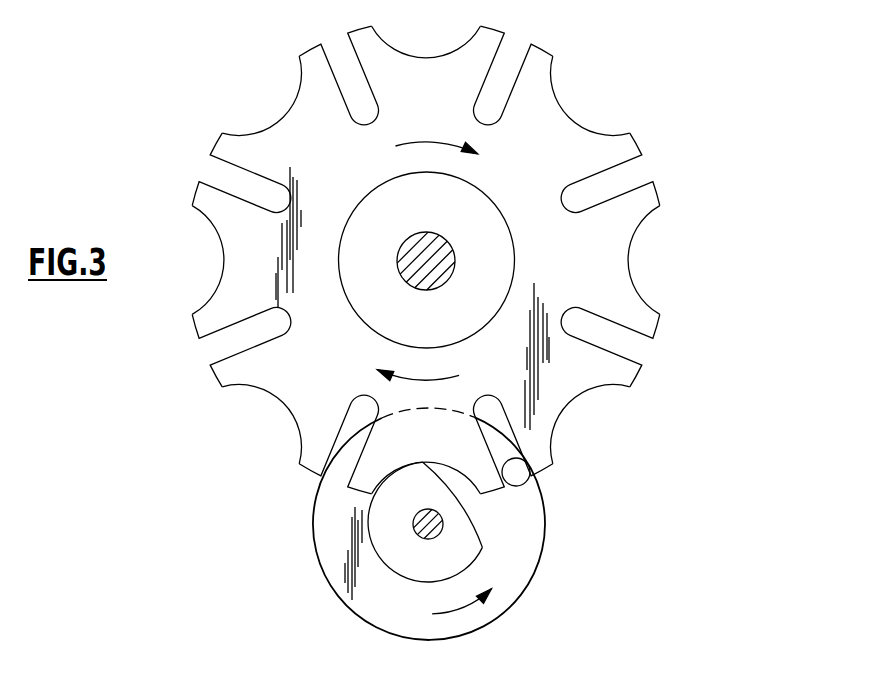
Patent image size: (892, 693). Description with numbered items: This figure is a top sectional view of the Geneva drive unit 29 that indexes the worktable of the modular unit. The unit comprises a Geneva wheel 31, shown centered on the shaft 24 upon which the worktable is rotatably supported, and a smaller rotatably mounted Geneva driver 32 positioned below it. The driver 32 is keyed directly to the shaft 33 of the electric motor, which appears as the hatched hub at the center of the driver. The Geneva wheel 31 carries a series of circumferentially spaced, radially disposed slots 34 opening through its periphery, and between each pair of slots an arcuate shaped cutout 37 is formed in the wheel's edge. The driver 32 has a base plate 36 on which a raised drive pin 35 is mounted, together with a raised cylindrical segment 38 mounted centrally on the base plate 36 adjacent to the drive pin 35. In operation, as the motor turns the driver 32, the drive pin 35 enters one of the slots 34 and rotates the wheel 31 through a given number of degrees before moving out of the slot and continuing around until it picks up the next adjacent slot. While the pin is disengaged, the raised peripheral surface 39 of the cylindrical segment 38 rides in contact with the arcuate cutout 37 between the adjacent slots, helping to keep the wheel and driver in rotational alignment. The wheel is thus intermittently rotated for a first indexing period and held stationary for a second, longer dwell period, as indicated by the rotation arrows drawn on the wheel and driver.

The shaft 24 is at (452, 250).
The Geneva drive unit 29 is at (268, 445).
The Geneva wheel 31 is at (666, 240).
The Geneva driver 32 is at (574, 536).
The shaft 33 is at (419, 535).
The slots 34 is at (350, 45).
The drive pin 35 is at (519, 479).
The base plate 36 is at (334, 557).
The arcuate shaped cutout 37 is at (570, 112).
The raised cylindrical segment 38 is at (428, 582).
The raised peripheral surface 39 is at (368, 521).